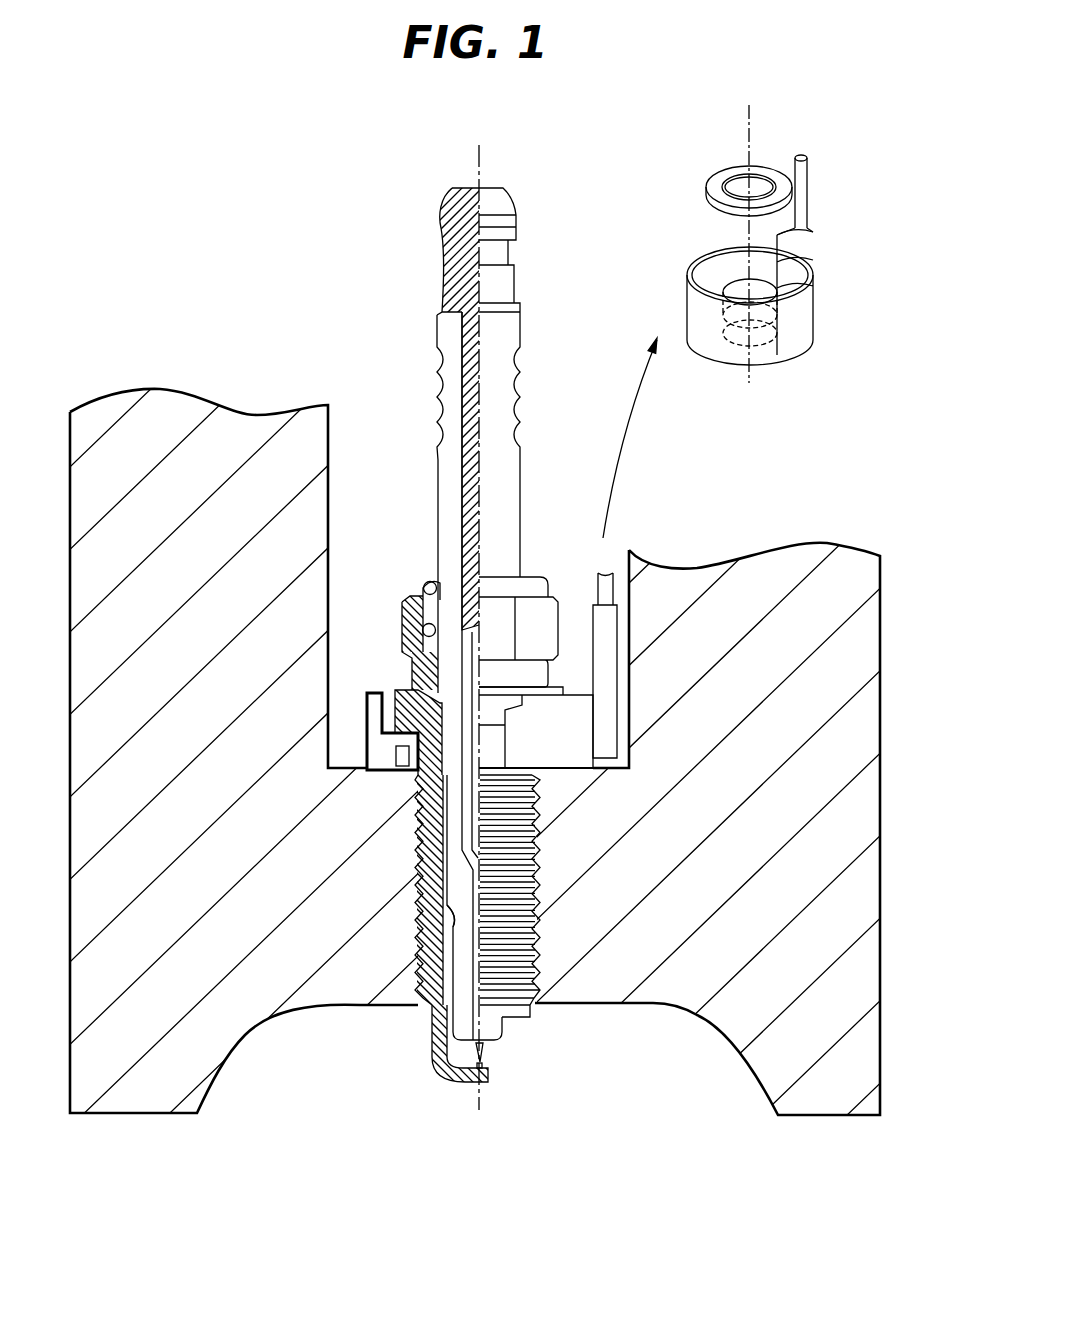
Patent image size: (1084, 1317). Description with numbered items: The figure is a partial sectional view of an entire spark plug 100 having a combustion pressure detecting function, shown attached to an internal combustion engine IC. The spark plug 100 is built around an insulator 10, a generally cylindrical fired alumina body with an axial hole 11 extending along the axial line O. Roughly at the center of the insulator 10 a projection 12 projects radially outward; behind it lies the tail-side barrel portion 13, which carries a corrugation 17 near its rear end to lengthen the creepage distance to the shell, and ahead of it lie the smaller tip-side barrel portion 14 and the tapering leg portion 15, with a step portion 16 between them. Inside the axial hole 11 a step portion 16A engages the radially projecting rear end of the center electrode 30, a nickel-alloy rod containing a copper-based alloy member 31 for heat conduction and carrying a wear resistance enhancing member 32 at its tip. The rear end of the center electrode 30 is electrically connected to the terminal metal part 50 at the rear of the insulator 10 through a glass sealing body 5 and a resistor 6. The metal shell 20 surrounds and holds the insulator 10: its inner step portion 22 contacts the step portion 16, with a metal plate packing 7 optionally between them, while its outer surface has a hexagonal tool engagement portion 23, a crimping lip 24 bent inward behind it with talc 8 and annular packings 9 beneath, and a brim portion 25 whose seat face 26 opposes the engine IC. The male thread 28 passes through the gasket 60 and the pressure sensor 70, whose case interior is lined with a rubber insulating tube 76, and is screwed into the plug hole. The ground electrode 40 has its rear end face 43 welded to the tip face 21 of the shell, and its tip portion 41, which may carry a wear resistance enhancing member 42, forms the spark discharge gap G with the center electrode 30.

The spark plug 100 is at (492, 625).
The glass sealing body 5 is at (472, 643).
The resistor 6 is at (470, 792).
The metal plate packing 7 is at (415, 930).
The talc 8 is at (420, 610).
The annular packings 9 is at (426, 583).
The insulator 10 is at (439, 462).
The axial hole 11 is at (465, 422).
The projection 12 is at (436, 660).
The tail-side barrel portion 13 is at (446, 498).
The tip-side barrel portion 14 is at (450, 803).
The leg portion 15 is at (460, 985).
The step portion 16 is at (440, 908).
The step portion 16A is at (477, 865).
The corrugation 17 is at (445, 362).
The metal shell 20 is at (562, 624).
The tip face 21 is at (520, 1008).
The step portion 22 is at (540, 937).
The tool engagement portion 23 is at (405, 638).
The crimping lip 24 is at (427, 578).
The brim portion 25 is at (415, 690).
The seat face 26 is at (405, 745).
The male thread 28 is at (510, 826).
The center electrode 30 is at (435, 1072).
The member made of a copper-based alloy 31 is at (493, 895).
The wear resistance enhancing member 32 is at (483, 1048).
The ground electrode 40 is at (466, 1080).
The tip portion 41 is at (484, 1078).
The wear resistance enhancing member 42 is at (487, 1074).
The rear end face 43 is at (437, 1030).
The terminal metal part 50 is at (458, 200).
The gasket 60 is at (378, 722).
The pressure sensor 70 is at (669, 287).
The rubber insulating tube 76 is at (610, 592).
The spark discharge gap G is at (485, 1066).
The axial line O is at (479, 613).
The internal combustion engine IC is at (880, 806).